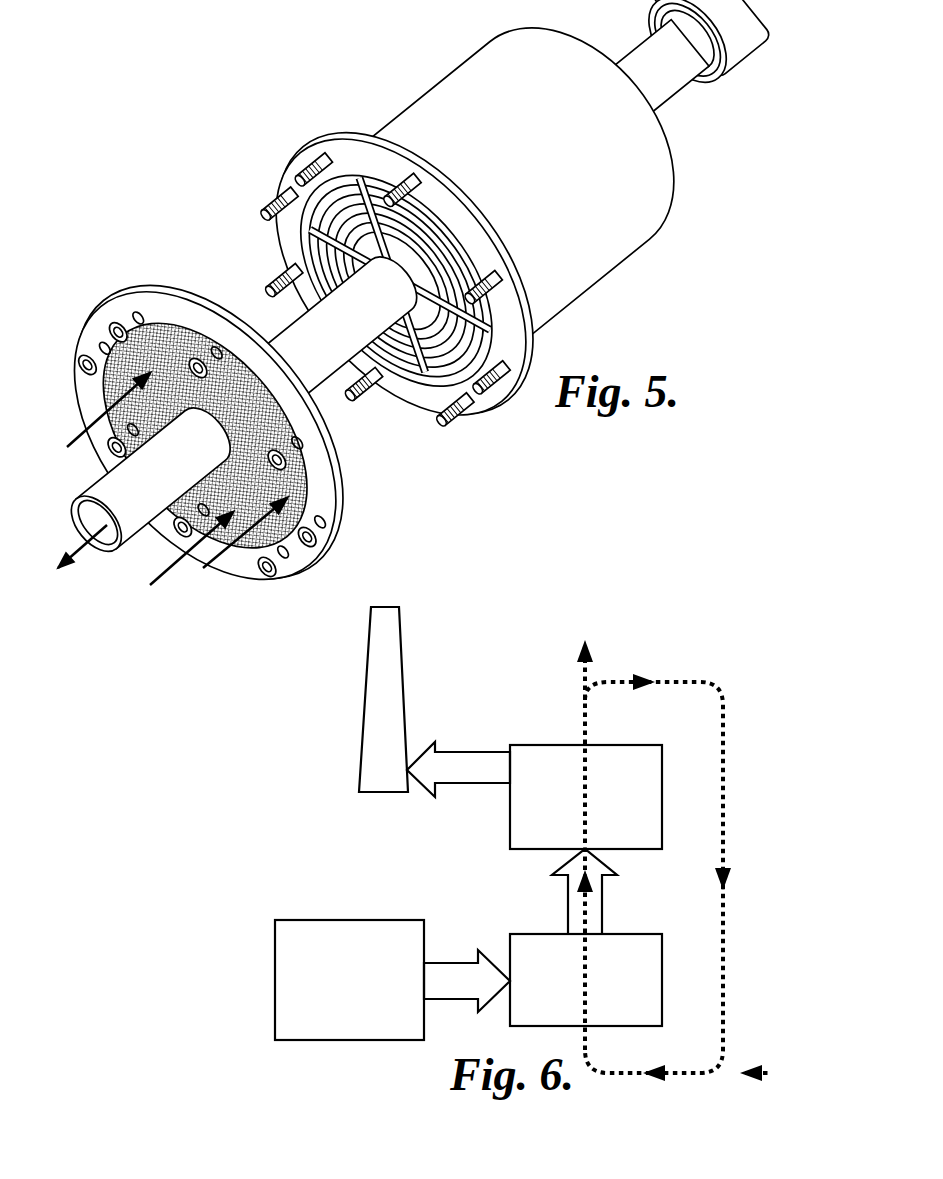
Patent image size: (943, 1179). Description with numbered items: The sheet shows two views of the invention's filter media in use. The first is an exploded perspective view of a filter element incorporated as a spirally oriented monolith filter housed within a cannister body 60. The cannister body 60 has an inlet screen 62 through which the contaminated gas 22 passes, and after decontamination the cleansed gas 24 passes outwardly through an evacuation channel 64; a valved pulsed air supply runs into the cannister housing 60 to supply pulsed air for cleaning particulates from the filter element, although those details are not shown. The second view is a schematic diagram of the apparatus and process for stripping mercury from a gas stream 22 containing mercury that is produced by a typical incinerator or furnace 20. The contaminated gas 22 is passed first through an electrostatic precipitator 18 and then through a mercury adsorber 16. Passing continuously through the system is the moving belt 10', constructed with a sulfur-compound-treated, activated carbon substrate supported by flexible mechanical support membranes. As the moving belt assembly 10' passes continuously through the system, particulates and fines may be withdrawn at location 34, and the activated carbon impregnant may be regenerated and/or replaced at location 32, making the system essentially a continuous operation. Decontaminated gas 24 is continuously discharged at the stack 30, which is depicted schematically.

In FIG. 5, the cannister body 60 is at (622, 204).
In FIG. 5, the evacuation channel 64 is at (280, 367).
In FIG. 5, the inlet screen 62 is at (173, 327).
In FIG. 5, the cleansed gas 24 is at (80, 553).
In FIG. 6, the cleansed gas 24 is at (458, 769).
In FIG. 5, the contaminated gas 22 is at (90, 427).
In FIG. 6, the contaminated gas 22 is at (467, 981).
In FIG. 6, the stack 30 is at (378, 682).
In FIG. 6, the mercury adsorber 16 is at (586, 797).
In FIG. 6, the electrostatic precipitator 18 is at (586, 980).
In FIG. 6, the incinerator or furnace 20 is at (349, 980).
In FIG. 6, the moving belt 10' is at (672, 846).
In FIG. 6, the location for withdrawal of particulates and fines 34 is at (583, 639).
In FIG. 6, the location for regeneration or replacement of impregnant 32 is at (773, 1080).